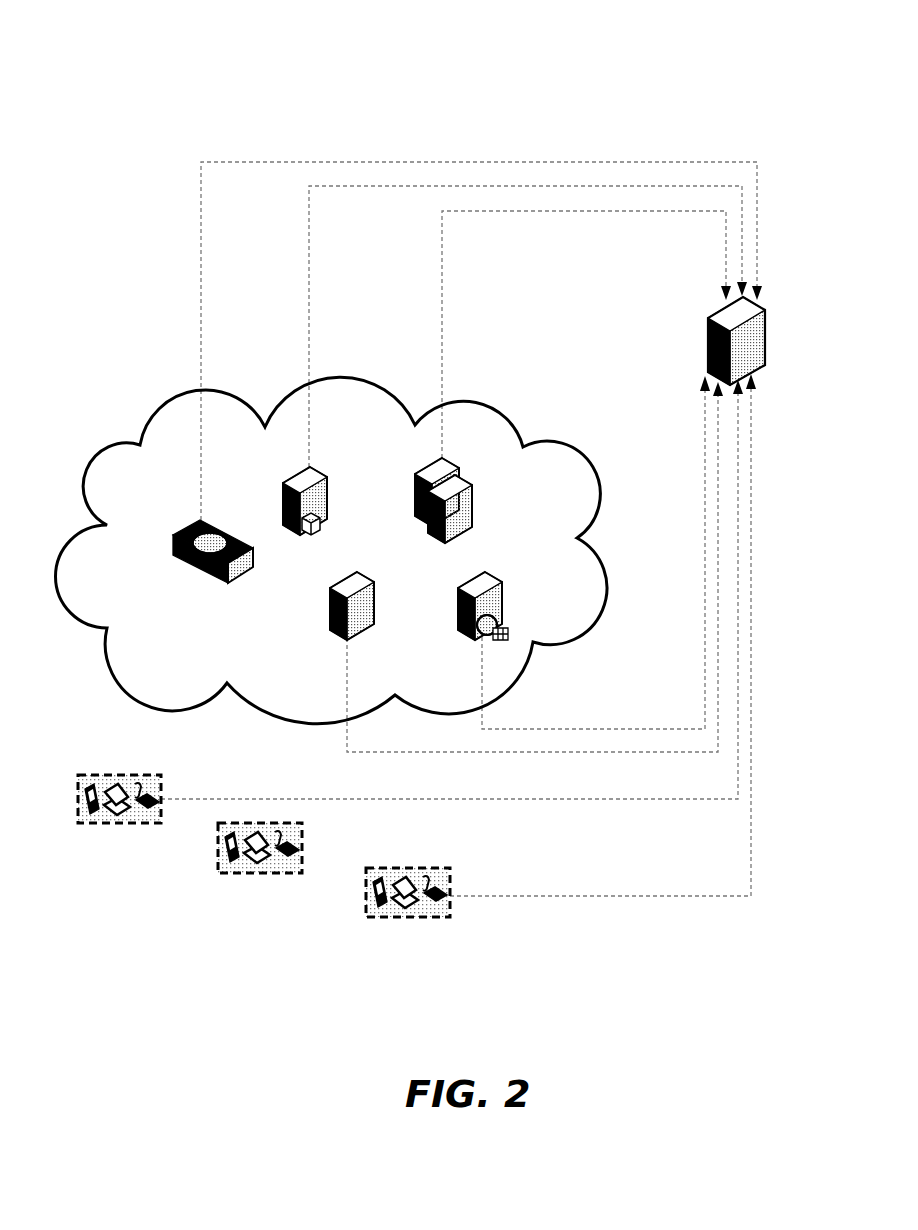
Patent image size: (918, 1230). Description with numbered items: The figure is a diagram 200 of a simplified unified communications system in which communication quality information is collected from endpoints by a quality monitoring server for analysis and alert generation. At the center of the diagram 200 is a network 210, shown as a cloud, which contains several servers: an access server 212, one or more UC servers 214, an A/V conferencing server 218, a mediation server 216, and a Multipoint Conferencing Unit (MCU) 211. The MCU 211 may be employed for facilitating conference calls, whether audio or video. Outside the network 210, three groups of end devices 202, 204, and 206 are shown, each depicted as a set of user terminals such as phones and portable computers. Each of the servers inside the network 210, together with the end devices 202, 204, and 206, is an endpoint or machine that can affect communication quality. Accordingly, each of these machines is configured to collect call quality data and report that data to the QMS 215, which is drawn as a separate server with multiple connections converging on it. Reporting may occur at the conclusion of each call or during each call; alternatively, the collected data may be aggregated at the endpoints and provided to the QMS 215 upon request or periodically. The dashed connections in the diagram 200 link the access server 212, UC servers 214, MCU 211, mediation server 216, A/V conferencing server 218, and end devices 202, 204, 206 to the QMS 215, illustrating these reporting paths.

The diagram 200 is at (665, 63).
The end device 202 is at (137, 838).
The end device 204 is at (260, 880).
The end device 206 is at (407, 930).
The network 210 is at (125, 432).
The Multipoint Conferencing Unit (MCU) 211 is at (188, 518).
The access server 212 is at (295, 472).
The UC server(s) 214 is at (423, 462).
The QMS 215 is at (710, 296).
The mediation server 216 is at (335, 638).
The A/V conferencing server 218 is at (472, 637).